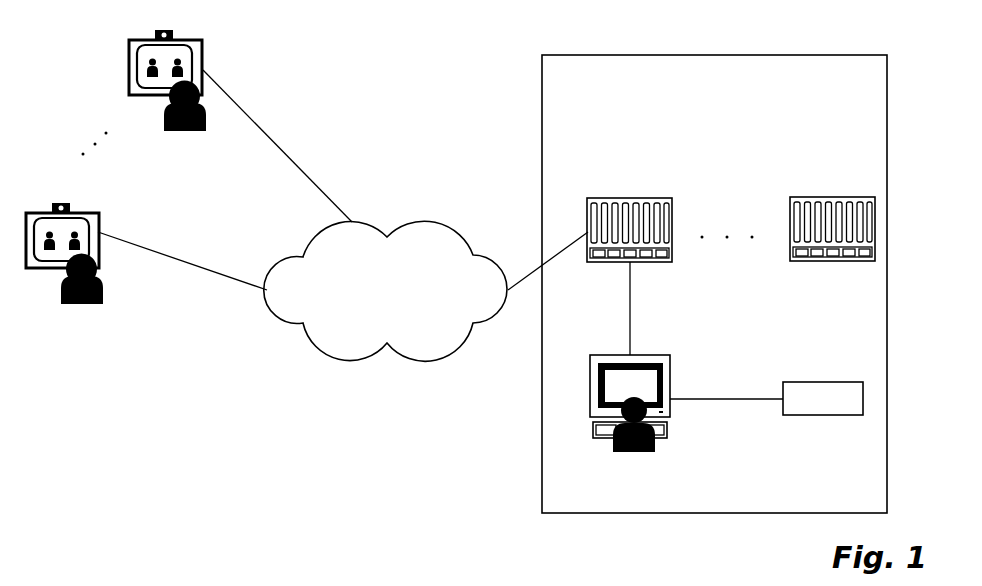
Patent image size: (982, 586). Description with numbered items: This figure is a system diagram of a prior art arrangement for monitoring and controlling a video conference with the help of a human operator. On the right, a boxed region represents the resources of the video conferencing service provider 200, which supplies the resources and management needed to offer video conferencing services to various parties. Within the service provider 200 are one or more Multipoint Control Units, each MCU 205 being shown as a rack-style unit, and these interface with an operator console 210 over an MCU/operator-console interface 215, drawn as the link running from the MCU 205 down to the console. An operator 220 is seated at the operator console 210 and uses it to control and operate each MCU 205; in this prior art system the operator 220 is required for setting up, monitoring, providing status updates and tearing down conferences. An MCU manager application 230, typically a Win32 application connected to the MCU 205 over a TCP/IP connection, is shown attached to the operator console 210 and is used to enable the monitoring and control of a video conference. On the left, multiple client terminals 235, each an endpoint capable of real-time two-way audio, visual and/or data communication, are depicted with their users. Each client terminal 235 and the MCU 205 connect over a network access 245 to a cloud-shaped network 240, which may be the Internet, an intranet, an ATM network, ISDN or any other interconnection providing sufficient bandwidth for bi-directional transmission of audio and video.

The service provider 200 is at (588, 78).
The Multipoint Control Unit 205 is at (622, 198).
The operator console 210 is at (672, 382).
The MCU/operator-console interface 215 is at (633, 298).
The operator 220 is at (655, 447).
The MCU manager application 230 is at (805, 382).
The client terminal 235 is at (202, 53).
The network 240 is at (468, 218).
The network access 245 is at (292, 160).